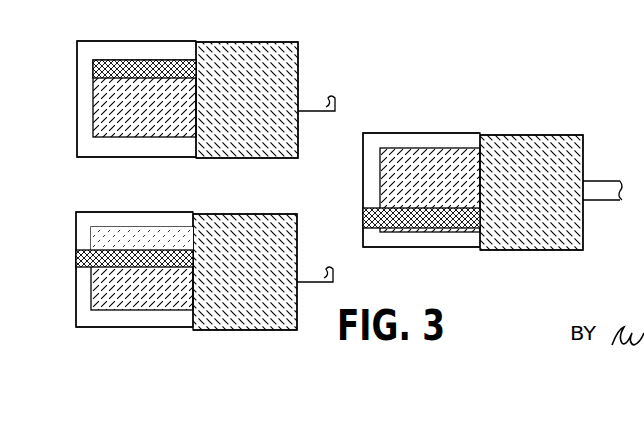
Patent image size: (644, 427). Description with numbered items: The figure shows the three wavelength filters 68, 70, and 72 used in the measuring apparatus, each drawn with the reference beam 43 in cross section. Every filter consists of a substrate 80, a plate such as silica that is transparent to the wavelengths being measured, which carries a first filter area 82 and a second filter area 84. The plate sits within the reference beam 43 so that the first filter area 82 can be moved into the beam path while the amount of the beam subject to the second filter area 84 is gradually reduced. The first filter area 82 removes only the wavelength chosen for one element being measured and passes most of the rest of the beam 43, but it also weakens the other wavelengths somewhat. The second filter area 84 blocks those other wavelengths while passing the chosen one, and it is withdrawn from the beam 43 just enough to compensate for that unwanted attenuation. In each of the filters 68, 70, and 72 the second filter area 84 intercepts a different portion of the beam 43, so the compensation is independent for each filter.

The reference beam 43 is at (102, 97).
The wavelength filter 68 is at (318, 70).
The wavelength filter 70 is at (292, 200).
The wavelength filter 72 is at (535, 123).
The substrate 80 is at (172, 148).
The first filter area 82 is at (267, 148).
The second filter area 84 is at (87, 63).